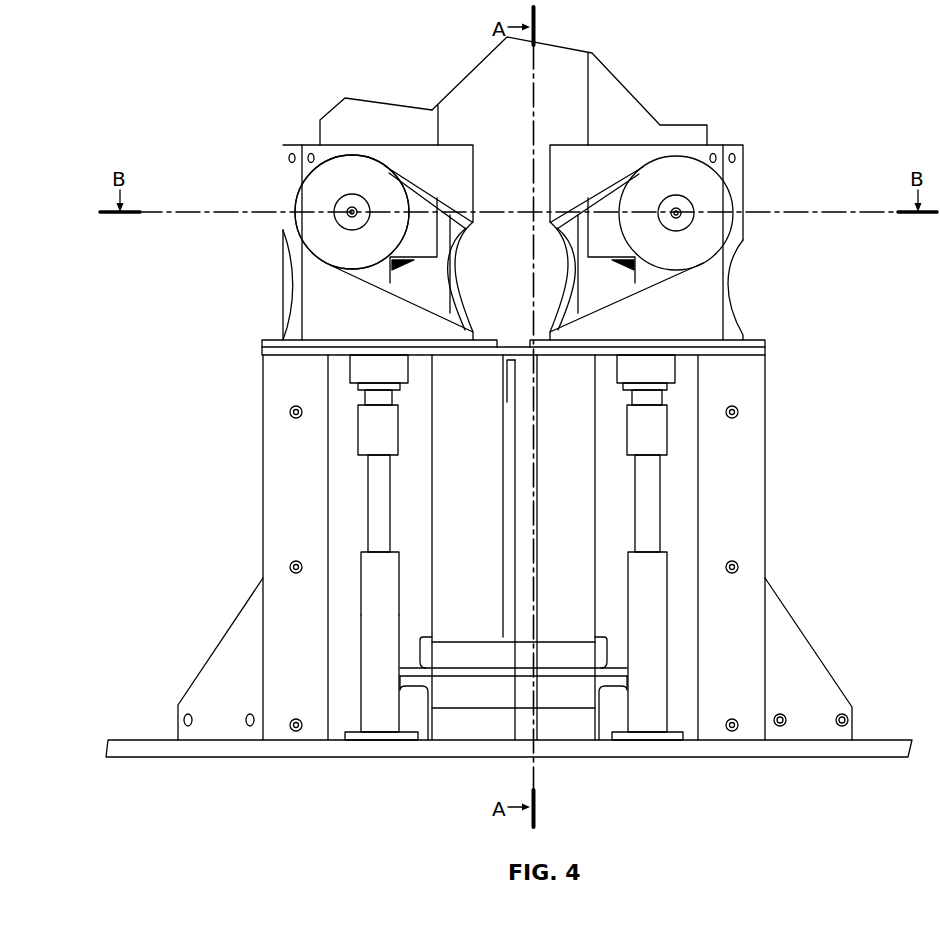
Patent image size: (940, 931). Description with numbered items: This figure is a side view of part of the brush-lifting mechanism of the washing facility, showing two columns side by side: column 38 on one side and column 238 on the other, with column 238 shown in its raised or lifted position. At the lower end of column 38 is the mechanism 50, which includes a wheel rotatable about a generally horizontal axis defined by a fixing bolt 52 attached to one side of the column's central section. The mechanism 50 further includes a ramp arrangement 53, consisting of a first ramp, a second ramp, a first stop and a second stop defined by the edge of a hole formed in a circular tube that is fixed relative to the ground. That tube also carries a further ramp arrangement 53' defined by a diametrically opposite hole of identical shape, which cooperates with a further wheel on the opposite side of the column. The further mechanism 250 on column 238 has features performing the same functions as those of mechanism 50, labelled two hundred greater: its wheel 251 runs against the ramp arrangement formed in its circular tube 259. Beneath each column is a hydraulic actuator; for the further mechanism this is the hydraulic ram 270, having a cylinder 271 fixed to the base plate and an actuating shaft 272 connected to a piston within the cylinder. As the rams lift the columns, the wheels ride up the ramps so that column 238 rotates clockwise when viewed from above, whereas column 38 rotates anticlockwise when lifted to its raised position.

The column 38 is at (610, 98).
The mechanism 50 is at (772, 127).
The fixing bolt 52 is at (683, 220).
The ramp arrangement 53 is at (683, 297).
The further ramp arrangement 53' is at (660, 143).
The column 238 is at (355, 120).
The further mechanism 250 is at (286, 122).
The wheel 251 is at (314, 228).
The circular tube 259 is at (295, 330).
The hydraulic ram 270 is at (377, 605).
The cylinder 271 is at (378, 653).
The actuating shaft 272 is at (378, 505).